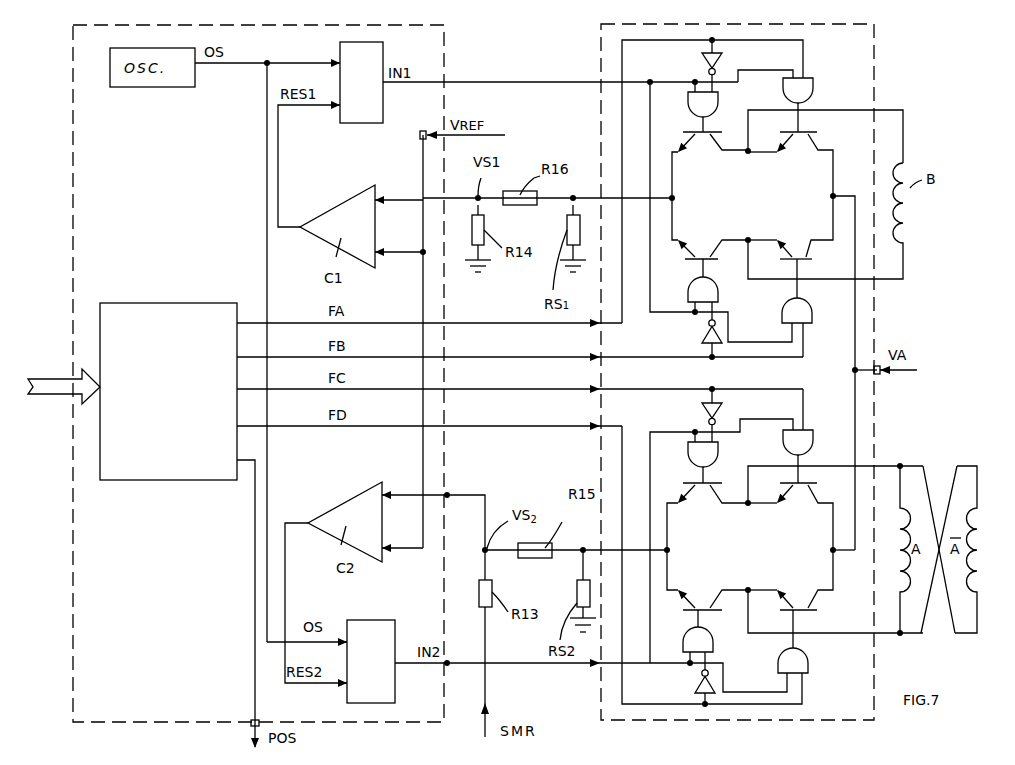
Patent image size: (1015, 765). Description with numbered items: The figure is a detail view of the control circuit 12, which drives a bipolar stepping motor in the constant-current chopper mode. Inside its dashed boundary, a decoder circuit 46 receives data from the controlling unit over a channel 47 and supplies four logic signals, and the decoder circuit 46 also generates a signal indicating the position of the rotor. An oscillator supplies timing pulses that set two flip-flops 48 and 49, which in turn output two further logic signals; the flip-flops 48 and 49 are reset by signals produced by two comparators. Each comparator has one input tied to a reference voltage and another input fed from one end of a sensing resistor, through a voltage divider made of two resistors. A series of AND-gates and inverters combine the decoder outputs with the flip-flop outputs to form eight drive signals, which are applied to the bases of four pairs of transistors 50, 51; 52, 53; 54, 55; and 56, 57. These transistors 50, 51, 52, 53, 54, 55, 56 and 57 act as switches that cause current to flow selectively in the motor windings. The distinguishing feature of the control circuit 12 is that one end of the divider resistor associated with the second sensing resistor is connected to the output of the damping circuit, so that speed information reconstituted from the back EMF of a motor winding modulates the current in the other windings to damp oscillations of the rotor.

The control circuit 12 is at (58, 608).
The decoder circuit 46 is at (160, 474).
The channel 47 is at (49, 385).
The flip-flop 48 is at (360, 120).
The flip-flop 49 is at (375, 620).
The transistor 50 is at (690, 133).
The transistor 51 is at (690, 262).
The transistor 52 is at (785, 134).
The transistor 53 is at (781, 261).
The transistor 54 is at (690, 485).
The transistor 55 is at (683, 612).
The transistor 56 is at (785, 484).
The transistor 57 is at (782, 612).